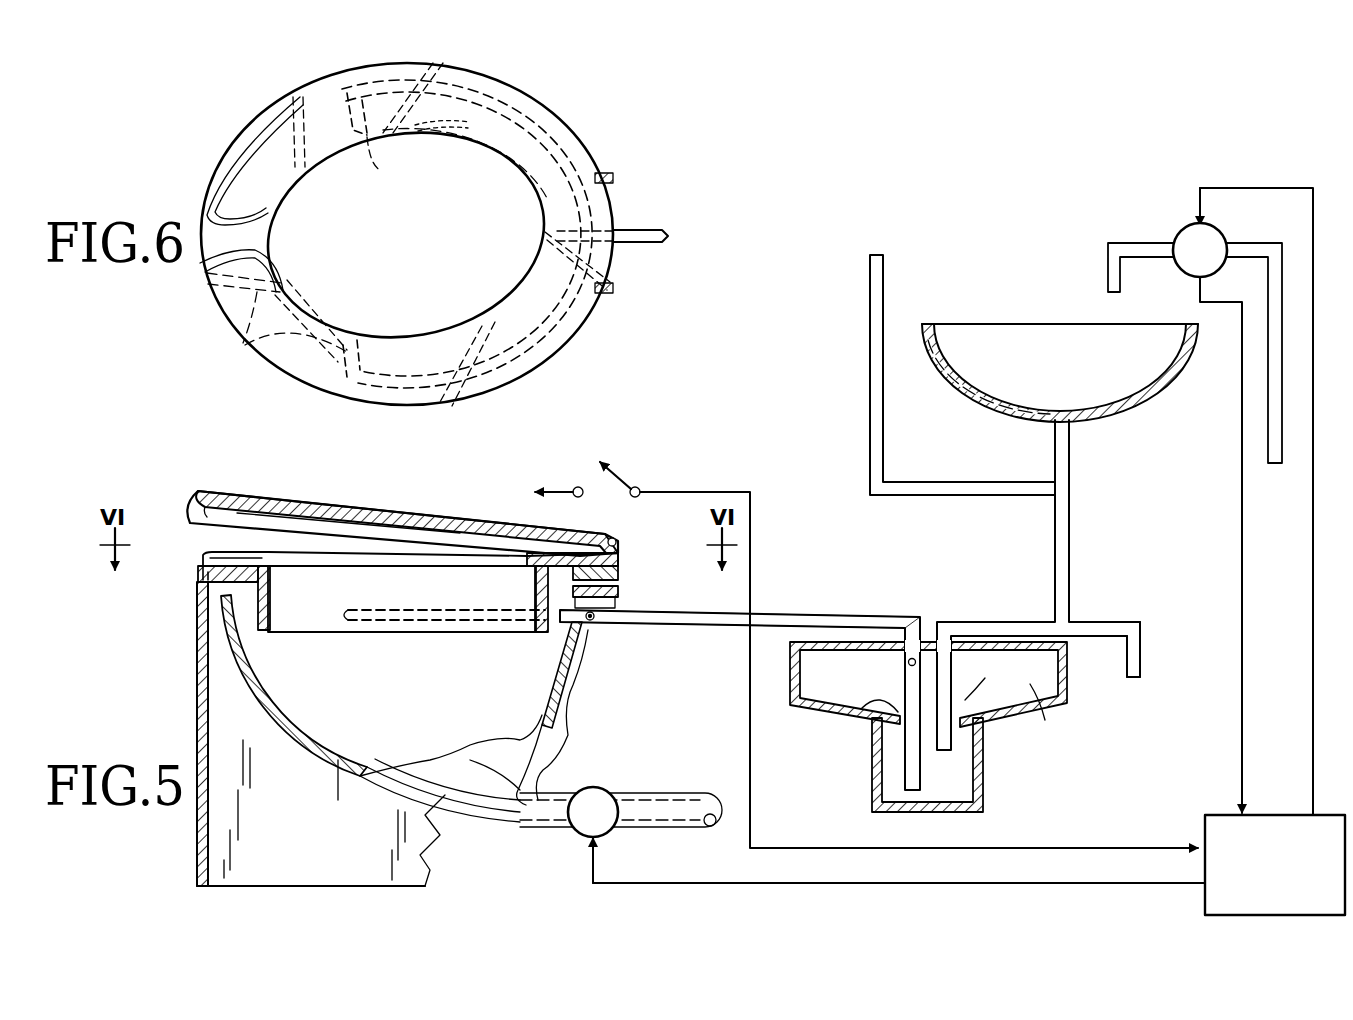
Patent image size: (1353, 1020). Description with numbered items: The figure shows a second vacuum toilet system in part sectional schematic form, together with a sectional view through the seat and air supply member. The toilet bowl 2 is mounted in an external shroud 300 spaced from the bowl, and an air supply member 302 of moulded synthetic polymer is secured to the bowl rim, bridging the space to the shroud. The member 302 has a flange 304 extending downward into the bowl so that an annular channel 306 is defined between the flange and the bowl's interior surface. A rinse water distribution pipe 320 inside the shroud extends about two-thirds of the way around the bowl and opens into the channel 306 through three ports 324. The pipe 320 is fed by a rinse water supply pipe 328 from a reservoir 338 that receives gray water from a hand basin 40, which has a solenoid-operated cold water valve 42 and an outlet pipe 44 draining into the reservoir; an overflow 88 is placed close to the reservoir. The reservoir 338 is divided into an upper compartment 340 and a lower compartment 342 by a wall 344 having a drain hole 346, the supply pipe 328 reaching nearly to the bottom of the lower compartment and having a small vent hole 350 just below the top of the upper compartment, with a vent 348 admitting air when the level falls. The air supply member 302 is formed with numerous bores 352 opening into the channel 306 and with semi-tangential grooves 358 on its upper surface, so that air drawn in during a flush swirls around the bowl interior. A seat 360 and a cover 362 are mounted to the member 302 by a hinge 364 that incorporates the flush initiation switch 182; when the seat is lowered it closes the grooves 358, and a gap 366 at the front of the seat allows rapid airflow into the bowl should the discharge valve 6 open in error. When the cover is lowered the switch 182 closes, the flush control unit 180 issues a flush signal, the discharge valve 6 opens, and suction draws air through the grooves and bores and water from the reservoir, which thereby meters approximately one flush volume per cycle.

In FIG. 5, the toilet bowl 2 is at (330, 768).
In FIG. 5, the discharge valve 6 is at (605, 800).
In FIG. 5, the hand basin 40 is at (1128, 400).
In FIG. 5, the cold water valve 42 is at (1185, 228).
In FIG. 5, the outlet pipe 44 is at (1069, 490).
In FIG. 5, the overflow 88 is at (1140, 660).
In FIG. 5, the flush control unit 180 is at (1205, 825).
In FIG. 5, the flush initiation switch 182 is at (612, 478).
In FIG. 5, the external shroud 300 is at (365, 875).
In FIG. 5, the air supply member 302 is at (618, 573).
In FIG. 5, the flange 304 is at (535, 630).
In FIG. 5, the annular channel 306 is at (268, 630).
In FIG. 6, the rinse water distribution pipe 320 is at (545, 97).
In FIG. 5, the rinse water distribution pipe 320 is at (450, 635).
In FIG. 6, the ports 324 is at (365, 345).
In FIG. 5, the ports 324 is at (530, 612).
In FIG. 6, the rinse water supply pipe 328 is at (662, 230).
In FIG. 5, the rinse water supply pipe 328 is at (845, 596).
In FIG. 5, the reservoir 338 is at (1070, 665).
In FIG. 5, the upper compartment 340 is at (1040, 705).
In FIG. 5, the lower compartment 342 is at (985, 785).
In FIG. 5, the wall 344 is at (850, 710).
In FIG. 5, the drain hole 346 is at (965, 710).
In FIG. 5, the vent 348 is at (883, 450).
In FIG. 5, the vent hole 350 is at (906, 664).
In FIG. 5, the bores 352 is at (198, 585).
In FIG. 6, the grooves 358 is at (242, 340).
In FIG. 6, the seat 360 is at (262, 130).
In FIG. 5, the seat 360 is at (445, 552).
In FIG. 5, the cover 362 is at (385, 500).
In FIG. 5, the hinge 364 is at (616, 540).
In FIG. 6, the gap 366 is at (220, 228).
In FIG. 5, the gap 366 is at (218, 552).